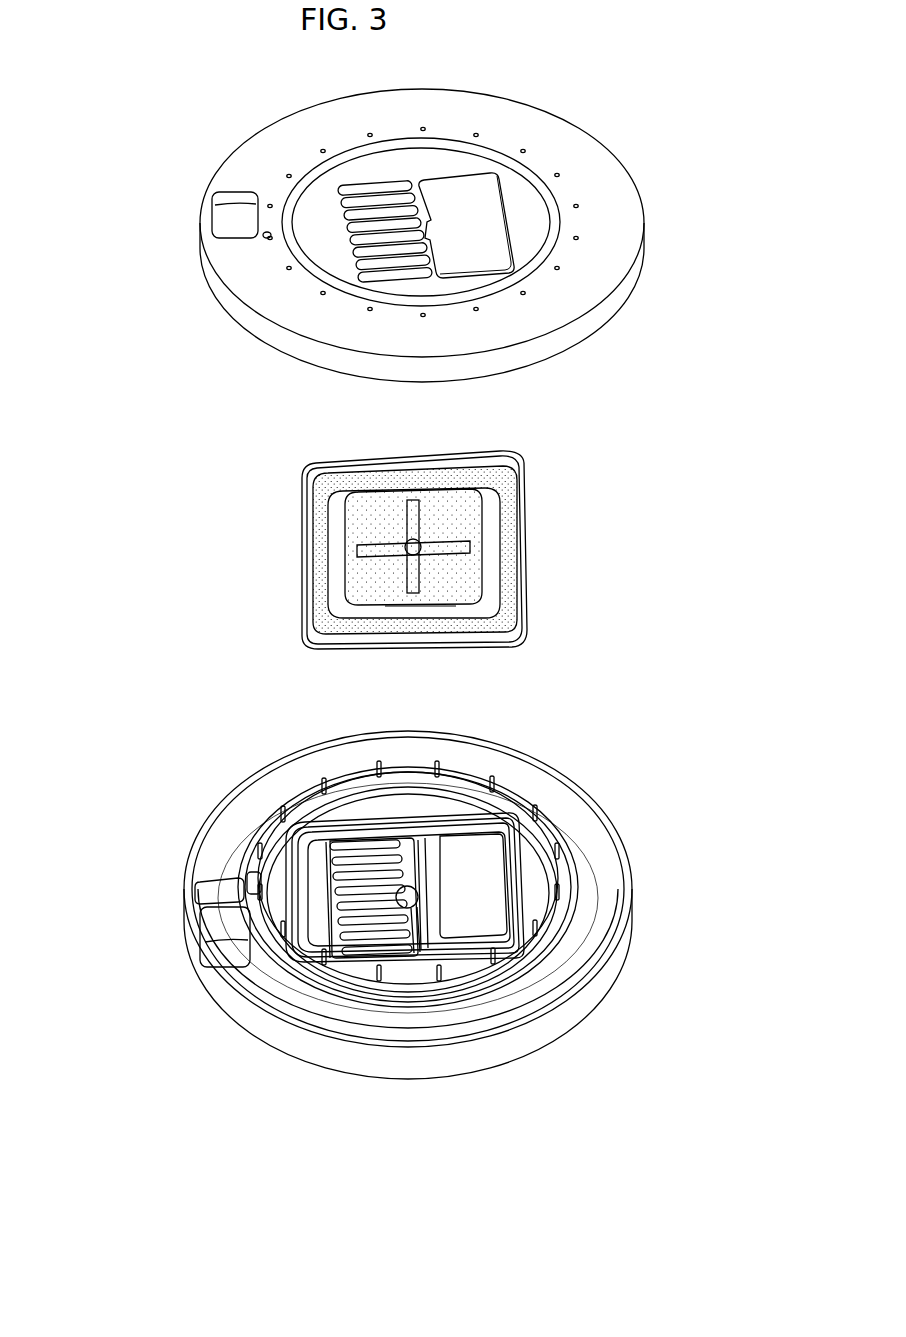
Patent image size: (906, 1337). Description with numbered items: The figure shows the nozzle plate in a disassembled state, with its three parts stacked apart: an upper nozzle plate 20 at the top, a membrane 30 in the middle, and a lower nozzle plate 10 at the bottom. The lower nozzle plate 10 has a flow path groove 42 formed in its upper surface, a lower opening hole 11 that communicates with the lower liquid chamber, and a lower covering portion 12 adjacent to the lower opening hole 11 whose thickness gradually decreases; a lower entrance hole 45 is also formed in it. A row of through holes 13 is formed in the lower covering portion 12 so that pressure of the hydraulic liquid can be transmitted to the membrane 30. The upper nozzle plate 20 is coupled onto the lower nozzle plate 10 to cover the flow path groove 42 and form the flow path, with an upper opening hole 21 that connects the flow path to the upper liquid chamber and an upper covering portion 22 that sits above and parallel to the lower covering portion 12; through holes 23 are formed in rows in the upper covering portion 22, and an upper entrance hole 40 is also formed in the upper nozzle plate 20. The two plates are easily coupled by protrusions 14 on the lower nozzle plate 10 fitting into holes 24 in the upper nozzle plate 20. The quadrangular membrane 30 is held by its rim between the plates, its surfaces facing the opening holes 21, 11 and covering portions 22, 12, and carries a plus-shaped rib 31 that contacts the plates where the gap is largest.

The lower nozzle plate 10 is at (612, 827).
The lower opening hole 11 is at (479, 897).
The lower covering portion 12 is at (367, 868).
The through hole 13 is at (383, 845).
The protrusion 14 is at (522, 790).
The upper nozzle plate 20 is at (618, 212).
The upper opening hole 21 is at (463, 212).
The upper covering portion 22 is at (358, 193).
The through hole 23 is at (367, 182).
The hole 24 is at (558, 180).
The membrane 30 is at (518, 540).
The rib 31 is at (358, 546).
The upper entrance hole 40 is at (240, 223).
The flow path groove 42 is at (323, 1013).
The lower entrance hole 45 is at (240, 958).